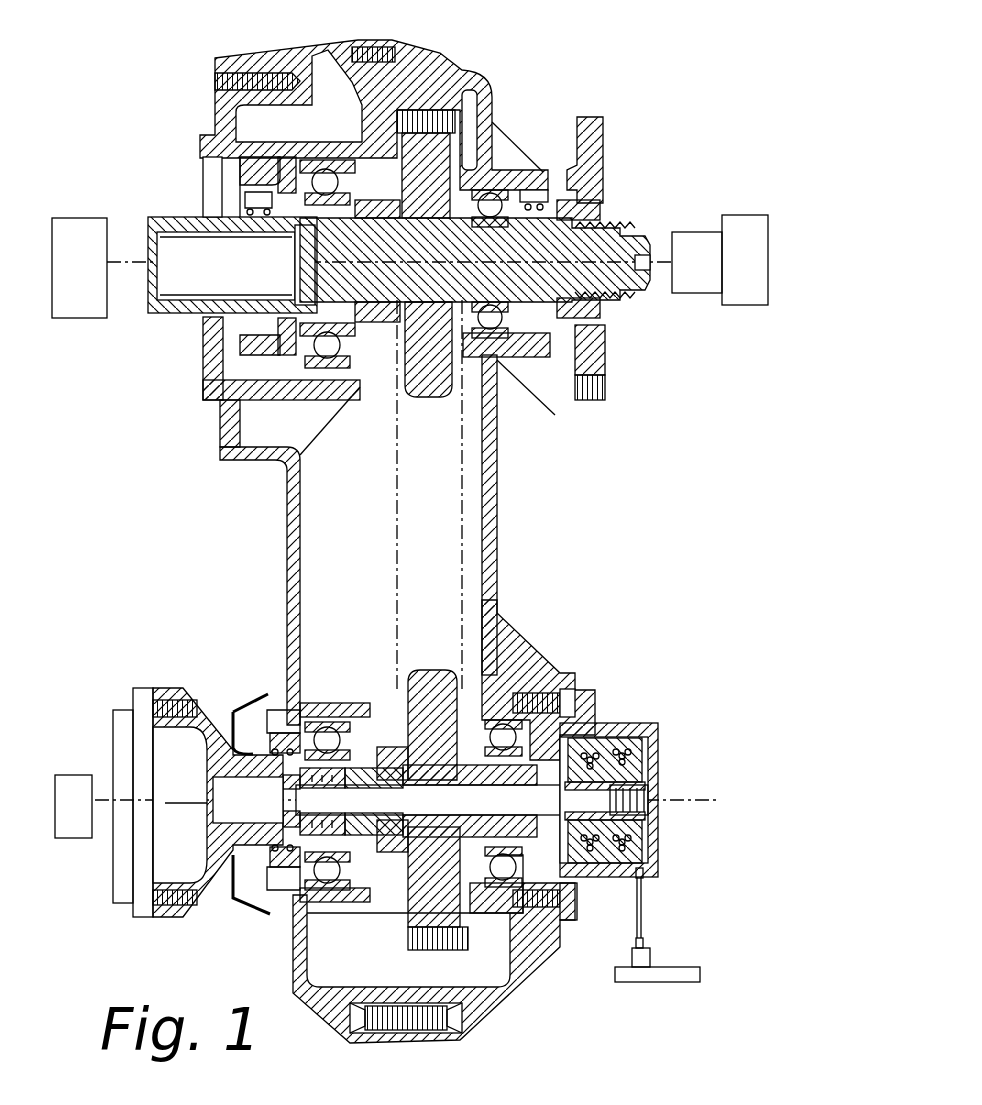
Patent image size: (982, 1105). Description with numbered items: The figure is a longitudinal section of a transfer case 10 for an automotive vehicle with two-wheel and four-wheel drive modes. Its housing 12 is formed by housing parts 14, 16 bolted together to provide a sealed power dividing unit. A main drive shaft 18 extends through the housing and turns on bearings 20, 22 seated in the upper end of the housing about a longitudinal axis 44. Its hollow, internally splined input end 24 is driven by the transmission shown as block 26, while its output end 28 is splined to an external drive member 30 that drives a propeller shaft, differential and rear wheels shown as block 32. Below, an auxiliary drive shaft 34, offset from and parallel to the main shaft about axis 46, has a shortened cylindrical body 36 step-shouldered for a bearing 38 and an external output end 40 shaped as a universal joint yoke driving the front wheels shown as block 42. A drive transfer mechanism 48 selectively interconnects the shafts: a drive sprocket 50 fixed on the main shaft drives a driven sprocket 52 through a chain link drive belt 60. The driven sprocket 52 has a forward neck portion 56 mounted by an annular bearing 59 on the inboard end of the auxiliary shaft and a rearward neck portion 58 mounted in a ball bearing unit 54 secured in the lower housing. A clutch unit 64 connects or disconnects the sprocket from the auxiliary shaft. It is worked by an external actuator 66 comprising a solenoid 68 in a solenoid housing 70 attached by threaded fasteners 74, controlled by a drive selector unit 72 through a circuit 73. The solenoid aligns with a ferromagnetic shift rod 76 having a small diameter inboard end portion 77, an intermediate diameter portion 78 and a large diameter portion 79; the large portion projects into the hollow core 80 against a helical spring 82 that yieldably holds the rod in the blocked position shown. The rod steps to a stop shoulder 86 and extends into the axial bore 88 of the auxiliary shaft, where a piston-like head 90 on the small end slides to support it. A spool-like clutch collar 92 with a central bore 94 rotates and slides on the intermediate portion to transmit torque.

The transfer case 10 is at (205, 57).
The housing 12 is at (283, 56).
The housing part 14 is at (225, 430).
The housing part 16 is at (492, 477).
The main drive shaft 18 is at (383, 304).
The bearing 20 is at (330, 337).
The bearing 22 is at (487, 212).
The input end 24 is at (183, 218).
The transmission block 26 is at (76, 318).
The output end 28 is at (627, 275).
The external drive member 30 is at (600, 136).
The rear drive block 32 is at (738, 222).
The auxiliary drive shaft 34 is at (218, 712).
The cylindrical body 36 is at (304, 755).
The bearing 38 is at (340, 705).
The external output end 40 is at (158, 690).
The front drive block 42 is at (72, 784).
The longitudinal axis 44 is at (190, 262).
The longitudinal axis 46 is at (200, 803).
The drive transfer mechanism 48 is at (388, 390).
The drive sprocket 50 is at (424, 380).
The driven sprocket 52 is at (428, 686).
The ball bearing unit 54 is at (498, 728).
The forward neck portion 56 is at (392, 745).
The rearward neck portion 58 is at (570, 750).
The annular bearing 59 is at (395, 853).
The chain link drive belt 60 is at (405, 505).
The clutch unit 64 is at (375, 872).
The external actuator 66 is at (662, 716).
The solenoid 68 is at (634, 745).
The solenoid housing 70 is at (656, 845).
The drive selector unit 72 is at (687, 967).
The circuit 73 is at (645, 900).
The threaded fasteners 74 is at (568, 702).
The shift rod 76 is at (442, 830).
The small diameter inboard end portion 77 is at (287, 818).
The intermediate diameter portion 78 is at (405, 792).
The large diameter portion 79 is at (497, 808).
The hollow core 80 is at (612, 778).
The helical spring 82 is at (648, 795).
The stop shoulder 86 is at (396, 804).
The axial bore 88 is at (282, 875).
The piston-like head 90 is at (287, 790).
The clutch collar 92 is at (367, 772).
The central bore 94 is at (403, 778).